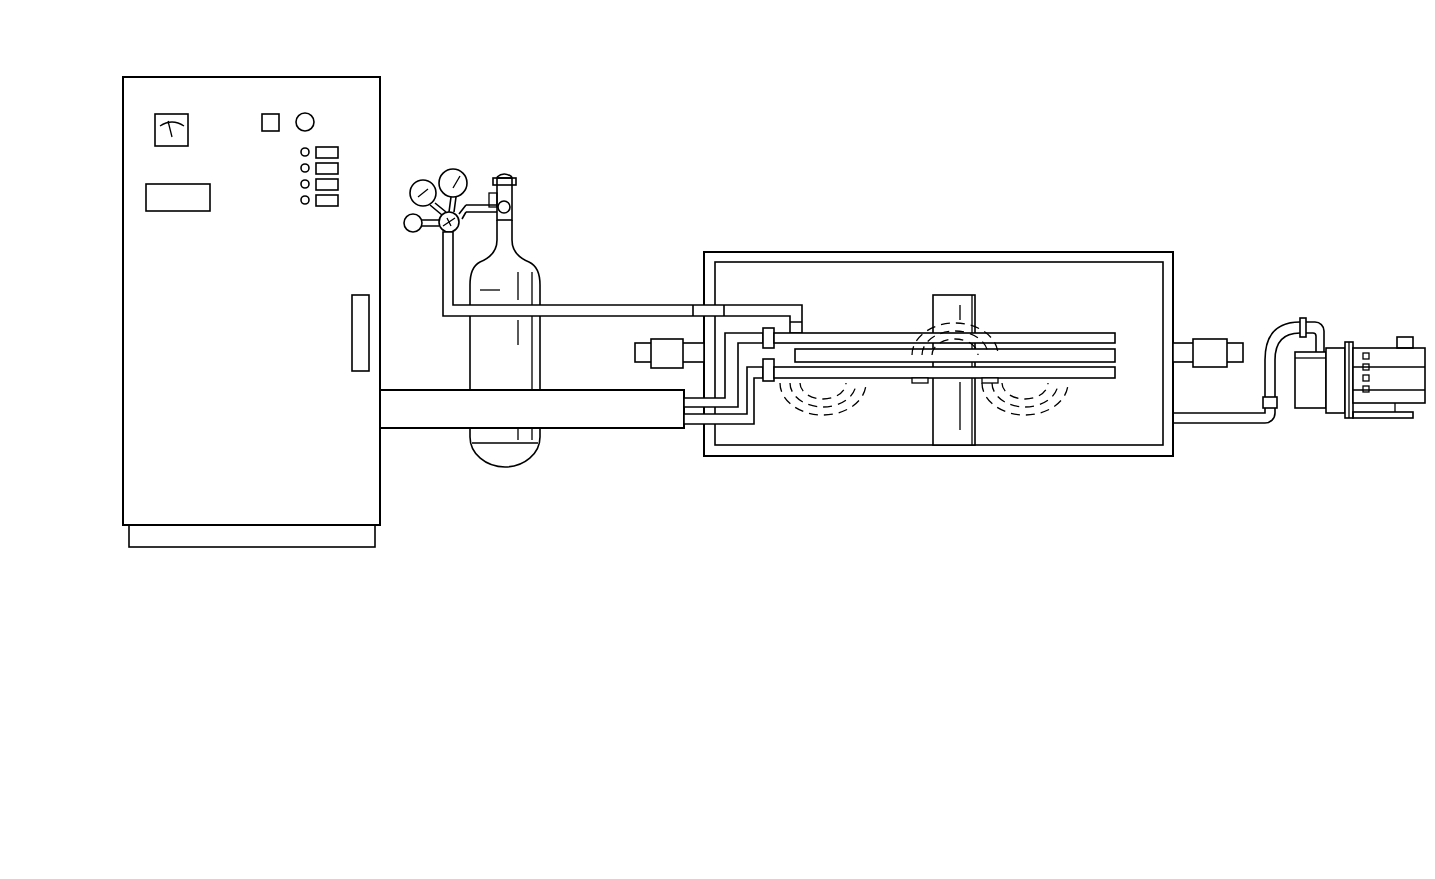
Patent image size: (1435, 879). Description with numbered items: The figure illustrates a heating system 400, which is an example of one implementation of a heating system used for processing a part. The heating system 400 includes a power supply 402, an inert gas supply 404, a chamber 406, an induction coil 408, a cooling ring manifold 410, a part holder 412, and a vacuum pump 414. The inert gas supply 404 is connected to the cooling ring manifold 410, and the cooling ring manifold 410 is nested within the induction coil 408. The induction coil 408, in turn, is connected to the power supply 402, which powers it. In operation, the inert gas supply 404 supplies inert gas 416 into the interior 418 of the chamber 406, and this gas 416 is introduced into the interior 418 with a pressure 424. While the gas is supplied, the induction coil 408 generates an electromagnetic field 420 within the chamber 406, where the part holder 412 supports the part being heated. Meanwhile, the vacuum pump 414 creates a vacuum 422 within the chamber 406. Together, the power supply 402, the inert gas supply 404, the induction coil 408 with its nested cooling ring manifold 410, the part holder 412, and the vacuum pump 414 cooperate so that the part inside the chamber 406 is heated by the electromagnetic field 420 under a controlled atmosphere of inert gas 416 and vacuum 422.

The heating system 400 is at (1003, 112).
The power supply 402 is at (247, 76).
The inert gas supply 404 is at (538, 238).
The chamber 406 is at (1093, 252).
The induction coil 408 is at (1084, 379).
The cooling ring manifold 410 is at (1038, 330).
The part holder 412 is at (933, 413).
The vacuum pump 414 is at (1375, 347).
The inert gas 416 is at (541, 290).
The interior 418 is at (887, 311).
The electromagnetic field 420 is at (812, 422).
The vacuum 422 is at (1153, 407).
The pressure 424 is at (778, 297).